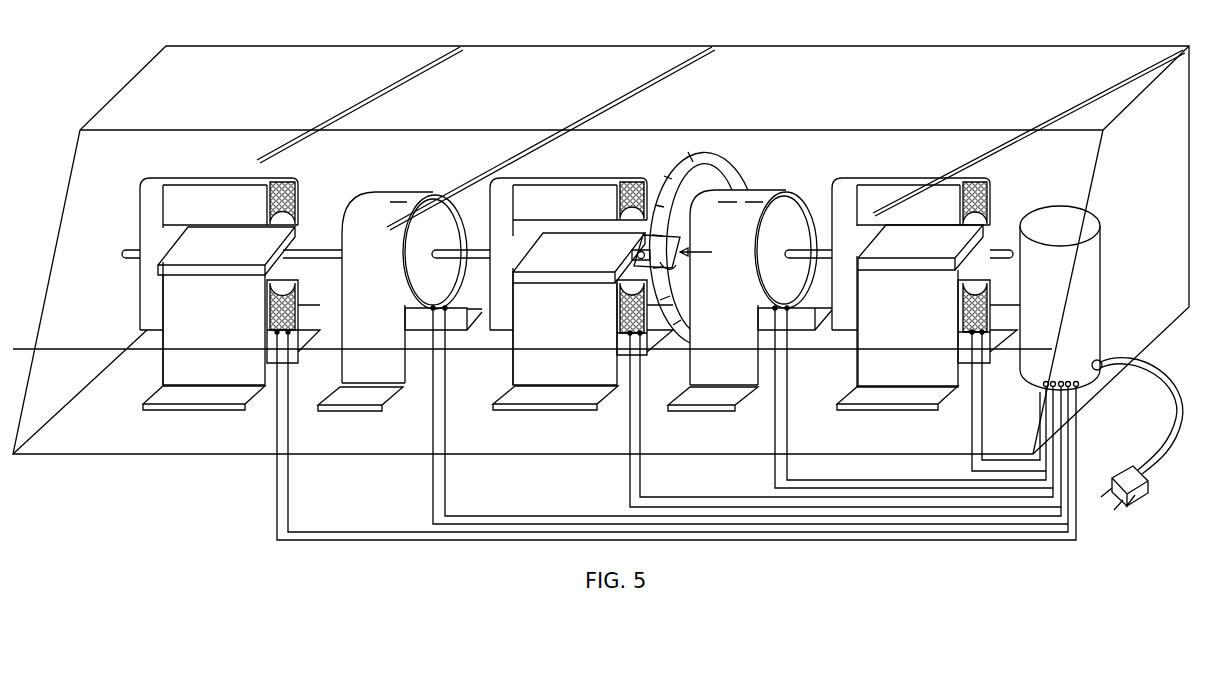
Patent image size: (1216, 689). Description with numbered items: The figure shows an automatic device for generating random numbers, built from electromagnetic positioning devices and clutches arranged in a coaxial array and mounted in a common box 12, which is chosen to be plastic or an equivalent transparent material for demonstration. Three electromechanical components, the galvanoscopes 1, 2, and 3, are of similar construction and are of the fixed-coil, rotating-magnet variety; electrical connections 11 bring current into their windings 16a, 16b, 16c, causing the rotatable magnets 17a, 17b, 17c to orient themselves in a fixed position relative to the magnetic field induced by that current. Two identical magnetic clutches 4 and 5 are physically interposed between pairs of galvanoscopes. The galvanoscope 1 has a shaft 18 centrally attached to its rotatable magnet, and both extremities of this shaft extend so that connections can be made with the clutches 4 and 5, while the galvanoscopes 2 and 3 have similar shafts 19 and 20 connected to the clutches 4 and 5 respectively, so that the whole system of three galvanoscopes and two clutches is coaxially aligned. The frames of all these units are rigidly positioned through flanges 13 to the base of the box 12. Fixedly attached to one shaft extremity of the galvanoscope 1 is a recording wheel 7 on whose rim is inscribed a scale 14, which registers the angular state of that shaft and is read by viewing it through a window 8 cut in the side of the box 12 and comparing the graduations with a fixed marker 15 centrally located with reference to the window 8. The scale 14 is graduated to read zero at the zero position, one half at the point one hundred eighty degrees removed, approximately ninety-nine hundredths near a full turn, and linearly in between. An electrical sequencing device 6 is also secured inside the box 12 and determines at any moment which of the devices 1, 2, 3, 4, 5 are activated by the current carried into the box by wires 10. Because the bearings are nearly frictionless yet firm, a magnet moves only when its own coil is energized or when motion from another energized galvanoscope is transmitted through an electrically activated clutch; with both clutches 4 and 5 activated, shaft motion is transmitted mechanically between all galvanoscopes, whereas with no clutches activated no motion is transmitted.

The galvanoscope 1 is at (578, 188).
The galvanoscope 2 is at (928, 188).
The galvanoscope 3 is at (227, 187).
The magnetic clutch 4 is at (755, 200).
The magnetic clutch 5 is at (385, 200).
The electrical sequencing device 6 is at (1100, 212).
The recording wheel 7 is at (740, 160).
The window 8 is at (672, 252).
The wires 10 is at (1160, 456).
The electrical connections 11 is at (966, 498).
The box 12 is at (985, 46).
The flanges 13 is at (184, 404).
The scale 14 is at (665, 176).
The marker 15 is at (705, 252).
The winding 16a is at (497, 206).
The winding 16b is at (840, 197).
The winding 16c is at (145, 206).
The rotatable magnet 17a is at (603, 276).
The rotatable magnet 17b is at (918, 270).
The rotatable magnet 17c is at (240, 253).
The shaft 18 is at (634, 257).
The shaft 19 is at (810, 258).
The shaft 20 is at (327, 248).